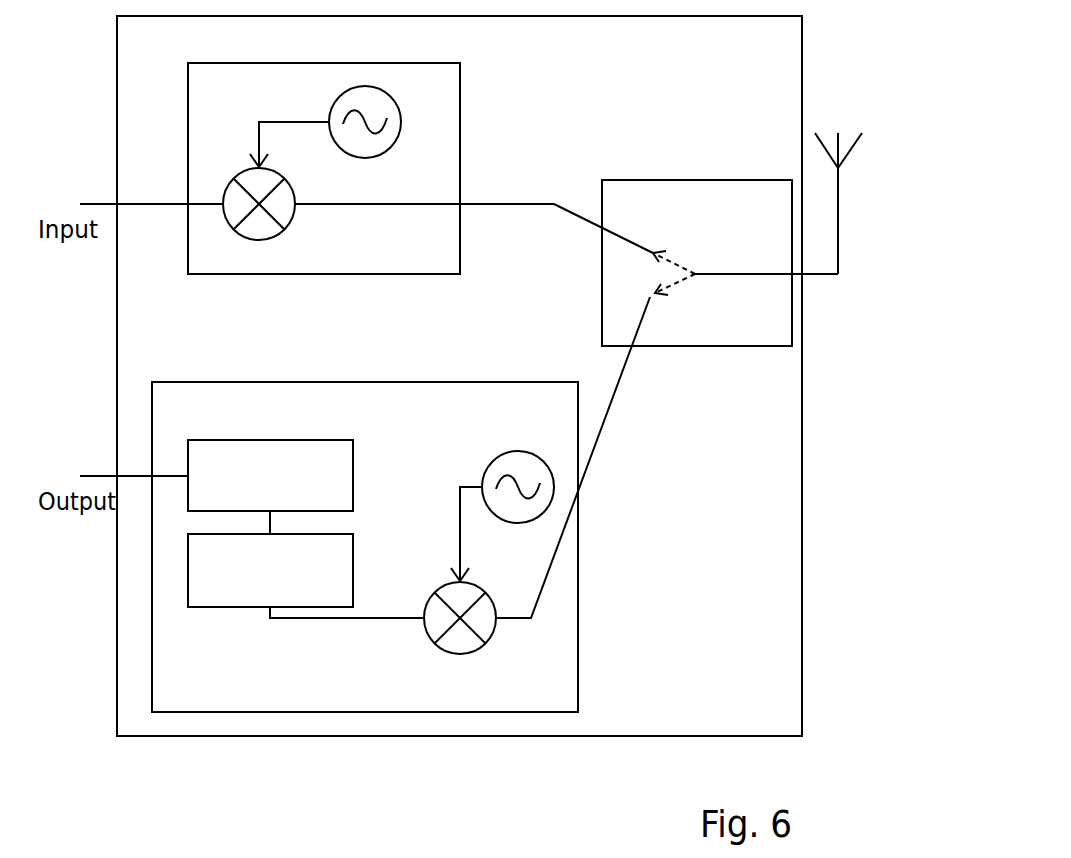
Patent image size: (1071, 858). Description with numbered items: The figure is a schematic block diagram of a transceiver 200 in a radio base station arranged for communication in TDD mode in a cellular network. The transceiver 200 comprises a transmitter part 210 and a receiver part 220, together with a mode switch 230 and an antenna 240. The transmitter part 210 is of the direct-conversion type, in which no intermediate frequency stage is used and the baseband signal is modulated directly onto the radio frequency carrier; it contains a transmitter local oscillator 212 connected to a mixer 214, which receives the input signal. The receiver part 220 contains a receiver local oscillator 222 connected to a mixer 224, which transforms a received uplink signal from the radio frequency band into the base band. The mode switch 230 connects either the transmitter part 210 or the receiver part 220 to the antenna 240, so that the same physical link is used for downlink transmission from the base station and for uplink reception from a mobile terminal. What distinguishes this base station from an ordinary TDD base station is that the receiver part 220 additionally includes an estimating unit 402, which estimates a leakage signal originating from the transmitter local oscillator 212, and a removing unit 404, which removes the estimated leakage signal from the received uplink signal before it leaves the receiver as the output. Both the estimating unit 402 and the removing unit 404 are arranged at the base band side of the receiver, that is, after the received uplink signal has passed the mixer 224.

The transceiver 200 is at (652, 116).
The transmitter part 210 is at (313, 102).
The transmitter local oscillator 212 is at (365, 86).
The mixer 214 is at (283, 228).
The receiver part 220 is at (301, 421).
The receiver local oscillator 222 is at (518, 451).
The mixer 224 is at (487, 632).
The mode switch 230 is at (728, 324).
The antenna 240 is at (838, 180).
The estimating unit 402 is at (353, 545).
The removing unit 404 is at (353, 462).